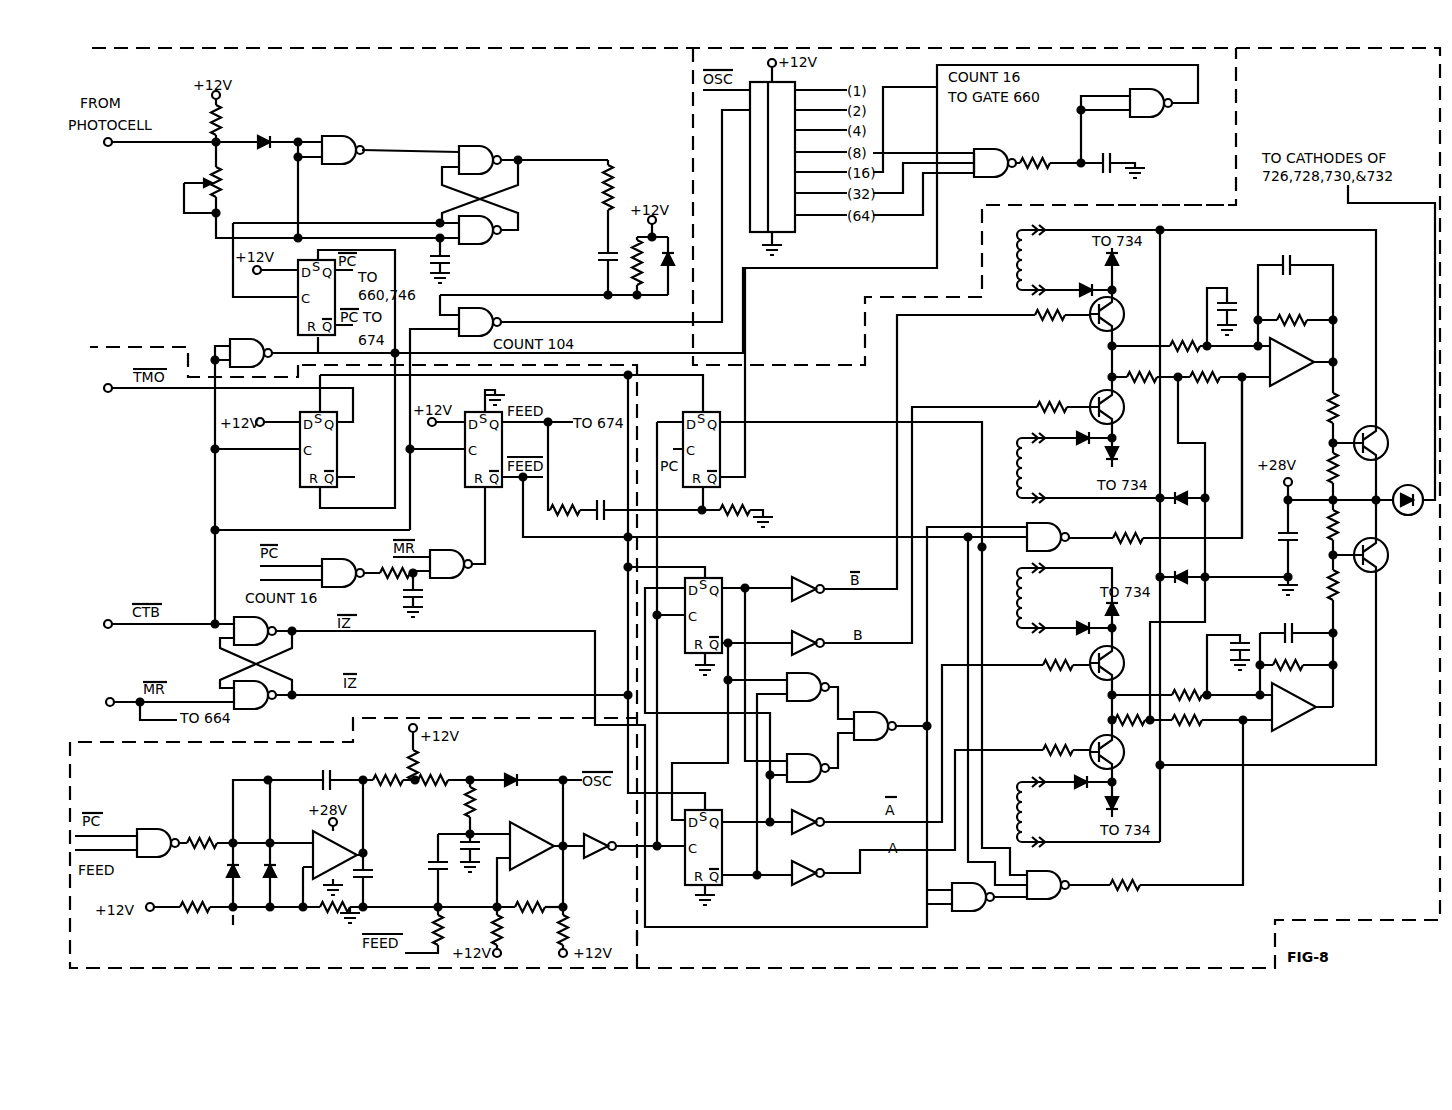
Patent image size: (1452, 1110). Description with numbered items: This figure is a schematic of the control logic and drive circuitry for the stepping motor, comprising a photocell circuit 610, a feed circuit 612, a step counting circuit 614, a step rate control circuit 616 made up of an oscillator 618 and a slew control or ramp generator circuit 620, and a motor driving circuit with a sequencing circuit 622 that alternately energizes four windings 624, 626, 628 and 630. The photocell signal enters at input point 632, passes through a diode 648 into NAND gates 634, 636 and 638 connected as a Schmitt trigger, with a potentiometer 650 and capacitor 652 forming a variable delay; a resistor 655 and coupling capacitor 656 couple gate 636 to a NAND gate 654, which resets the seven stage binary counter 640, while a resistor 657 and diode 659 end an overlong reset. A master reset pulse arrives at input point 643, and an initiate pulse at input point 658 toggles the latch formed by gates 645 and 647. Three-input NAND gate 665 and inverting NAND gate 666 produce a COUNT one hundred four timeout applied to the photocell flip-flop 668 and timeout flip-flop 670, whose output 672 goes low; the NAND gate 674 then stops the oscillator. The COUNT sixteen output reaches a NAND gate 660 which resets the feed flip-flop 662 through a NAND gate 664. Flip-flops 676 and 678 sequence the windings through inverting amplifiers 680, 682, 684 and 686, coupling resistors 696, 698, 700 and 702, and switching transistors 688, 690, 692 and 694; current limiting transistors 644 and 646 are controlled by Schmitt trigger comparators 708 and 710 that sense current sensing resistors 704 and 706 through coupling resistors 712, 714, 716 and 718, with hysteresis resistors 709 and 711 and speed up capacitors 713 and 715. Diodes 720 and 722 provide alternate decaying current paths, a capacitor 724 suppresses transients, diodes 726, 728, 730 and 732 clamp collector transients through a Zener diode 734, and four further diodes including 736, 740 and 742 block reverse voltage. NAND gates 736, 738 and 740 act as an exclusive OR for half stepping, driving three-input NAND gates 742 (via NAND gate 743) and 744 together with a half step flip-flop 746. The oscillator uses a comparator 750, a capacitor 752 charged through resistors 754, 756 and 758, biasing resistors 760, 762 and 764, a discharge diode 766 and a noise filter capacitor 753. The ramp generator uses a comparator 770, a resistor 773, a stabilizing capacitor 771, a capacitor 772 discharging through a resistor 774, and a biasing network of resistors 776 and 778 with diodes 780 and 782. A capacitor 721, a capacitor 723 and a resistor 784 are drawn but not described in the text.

The photocell circuit 610 is at (150, 55).
The feed circuit 612 is at (640, 412).
The step counting circuit 614 is at (690, 105).
The step rate control circuit 616 is at (642, 938).
The oscillator 618 is at (518, 914).
The slew control circuit 620 is at (233, 918).
The sequencing circuit 622 is at (1190, 205).
The stepping motor winding 624 is at (1017, 805).
The stepping motor winding 626 is at (1017, 595).
The stepping motor winding 628 is at (1017, 468).
The stepping motor winding 630 is at (1016, 262).
The input point 632 is at (108, 146).
The NAND gate 634 is at (340, 136).
The NAND gate 636 is at (472, 146).
The NAND gate 638 is at (492, 242).
The seven stage binary counter 640 is at (790, 237).
The input point 643 is at (115, 688).
The current limiting transistor 644 is at (1400, 426).
The gate 645 is at (256, 709).
The current limiting transistor 646 is at (1388, 568).
The gate 647 is at (234, 636).
The diode 648 is at (264, 136).
The potentiometer 650 is at (184, 206).
The capacitor 652 is at (455, 262).
The NAND gate 654 is at (493, 312).
The resistor 655 is at (614, 195).
The coupling capacitor 656 is at (600, 262).
The resistor 657 is at (627, 254).
The input point 658 is at (115, 604).
The diode 659 is at (674, 268).
The NAND gate 660 is at (340, 559).
The feed flip-flop 662 is at (465, 474).
The NAND gate 664 is at (444, 550).
The 3-input NAND gate 665 is at (992, 149).
The NAND gate 666 is at (1152, 122).
The photocell flip-flop 668 is at (298, 288).
The timeout flip-flop 670 is at (300, 472).
The output 672 is at (108, 392).
The NAND gate 674 is at (160, 829).
The flip-flop 676 is at (718, 885).
The flip-flop 678 is at (710, 578).
The inverting amplifier 680 is at (805, 866).
The inverting amplifier 682 is at (806, 815).
The inverting amplifier 684 is at (808, 634).
The inverting amplifier 686 is at (812, 570).
The switching transistor 688 is at (1115, 720).
The switching transistor 690 is at (1092, 680).
The switching transistor 692 is at (1094, 402).
The switching transistor 694 is at (1135, 308).
The coupling resistor 696 is at (1058, 736).
The coupling resistor 698 is at (1050, 672).
The coupling resistor 700 is at (1046, 400).
The coupling resistor 702 is at (1044, 322).
The current sensing resistor 704 is at (1120, 752).
The current sensing resistor 706 is at (1130, 372).
The Schmitt trigger comparator 708 is at (1296, 718).
The resistor 709 is at (1285, 672).
The Schmitt trigger comparator 710 is at (1290, 352).
The resistor 711 is at (1285, 312).
The coupling resistor 712 is at (1182, 727).
The speed up capacitor 713 is at (1290, 625).
The coupling resistor 714 is at (1186, 688).
The speed up capacitor 715 is at (1290, 258).
The coupling resistor 716 is at (1205, 372).
The coupling resistor 718 is at (1190, 333).
The diode 720 is at (1185, 558).
The capacitor 721 is at (1243, 638).
The diode 722 is at (1183, 490).
The capacitor 723 is at (1240, 298).
The capacitor 724 is at (1278, 545).
The diode 726 is at (1118, 806).
The diode 728 is at (1118, 610).
The diode 730 is at (1120, 455).
The diode 732 is at (1117, 262).
The Zener diode 734 is at (1410, 484).
The NAND gate 736 is at (815, 678).
The NAND gate 738 is at (815, 748).
The NAND gate 740 is at (876, 712).
The three input NAND gate 742 is at (1056, 872).
The NAND gate 743 is at (980, 911).
The three input NAND gate 744 is at (1056, 524).
The half step flip-flop 746 is at (720, 412).
The comparator 750 is at (535, 832).
The capacitor 752 is at (463, 840).
The capacitor 753 is at (433, 858).
The resistor 754 is at (408, 755).
The resistor 756 is at (430, 776).
The resistor 758 is at (485, 802).
The biasing resistor 760 is at (570, 928).
The biasing resistor 762 is at (530, 903).
The biasing resistor 764 is at (493, 928).
The diode 766 is at (512, 773).
The comparator 770 is at (313, 836).
The stabilizing capacitor 771 is at (375, 872).
The capacitor 772 is at (322, 772).
The resistor 773 is at (388, 788).
The resistor 774 is at (206, 836).
The resistor 776 is at (194, 914).
The resistor 778 is at (336, 914).
The diode 780 is at (228, 872).
The diode 782 is at (257, 867).
The resistor 784 is at (433, 928).